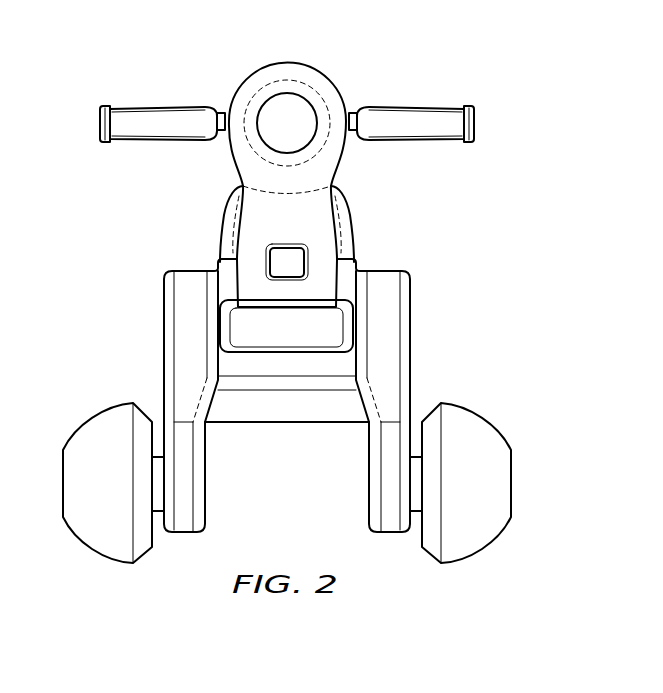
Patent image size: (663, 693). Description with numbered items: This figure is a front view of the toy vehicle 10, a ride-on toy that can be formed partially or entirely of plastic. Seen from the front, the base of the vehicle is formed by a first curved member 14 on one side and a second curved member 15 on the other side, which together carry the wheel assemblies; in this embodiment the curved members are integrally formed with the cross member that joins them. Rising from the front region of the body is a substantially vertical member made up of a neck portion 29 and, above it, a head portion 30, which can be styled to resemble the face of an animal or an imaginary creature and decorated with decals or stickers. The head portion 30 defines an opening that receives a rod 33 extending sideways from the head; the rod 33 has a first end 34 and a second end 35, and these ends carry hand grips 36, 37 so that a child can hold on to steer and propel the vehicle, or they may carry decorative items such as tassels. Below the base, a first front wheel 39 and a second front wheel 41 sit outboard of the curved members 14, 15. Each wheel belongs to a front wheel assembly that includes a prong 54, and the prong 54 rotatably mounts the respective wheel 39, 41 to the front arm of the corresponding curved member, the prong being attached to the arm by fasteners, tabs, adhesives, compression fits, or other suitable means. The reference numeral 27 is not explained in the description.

The toy vehicle 10 is at (313, 295).
The first curved member 14 is at (166, 320).
The second curved member 15 is at (408, 320).
The arm portion 27 is at (350, 197).
The neck portion 29 is at (305, 226).
The head portion 30 is at (314, 78).
The rod 33 is at (223, 110).
The first end 34 is at (105, 98).
The second end 35 is at (490, 118).
The hand grip 36 is at (163, 141).
The hand grip 37 is at (423, 141).
The first front wheel 39 is at (82, 442).
The second front wheel 41 is at (492, 442).
The prong 54 is at (158, 484).